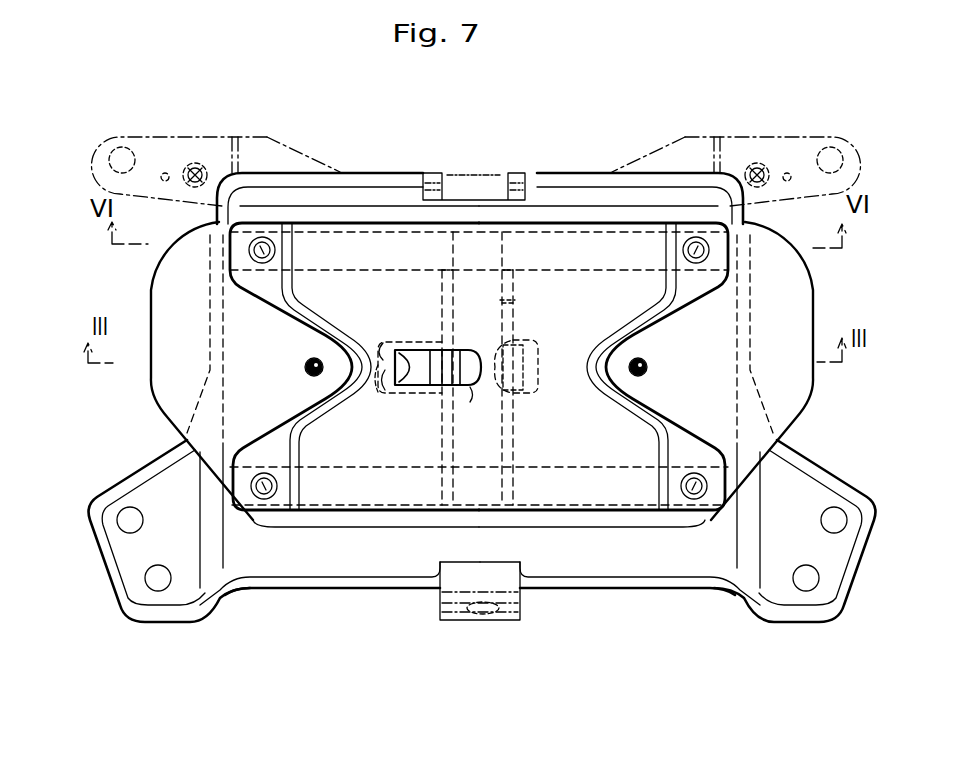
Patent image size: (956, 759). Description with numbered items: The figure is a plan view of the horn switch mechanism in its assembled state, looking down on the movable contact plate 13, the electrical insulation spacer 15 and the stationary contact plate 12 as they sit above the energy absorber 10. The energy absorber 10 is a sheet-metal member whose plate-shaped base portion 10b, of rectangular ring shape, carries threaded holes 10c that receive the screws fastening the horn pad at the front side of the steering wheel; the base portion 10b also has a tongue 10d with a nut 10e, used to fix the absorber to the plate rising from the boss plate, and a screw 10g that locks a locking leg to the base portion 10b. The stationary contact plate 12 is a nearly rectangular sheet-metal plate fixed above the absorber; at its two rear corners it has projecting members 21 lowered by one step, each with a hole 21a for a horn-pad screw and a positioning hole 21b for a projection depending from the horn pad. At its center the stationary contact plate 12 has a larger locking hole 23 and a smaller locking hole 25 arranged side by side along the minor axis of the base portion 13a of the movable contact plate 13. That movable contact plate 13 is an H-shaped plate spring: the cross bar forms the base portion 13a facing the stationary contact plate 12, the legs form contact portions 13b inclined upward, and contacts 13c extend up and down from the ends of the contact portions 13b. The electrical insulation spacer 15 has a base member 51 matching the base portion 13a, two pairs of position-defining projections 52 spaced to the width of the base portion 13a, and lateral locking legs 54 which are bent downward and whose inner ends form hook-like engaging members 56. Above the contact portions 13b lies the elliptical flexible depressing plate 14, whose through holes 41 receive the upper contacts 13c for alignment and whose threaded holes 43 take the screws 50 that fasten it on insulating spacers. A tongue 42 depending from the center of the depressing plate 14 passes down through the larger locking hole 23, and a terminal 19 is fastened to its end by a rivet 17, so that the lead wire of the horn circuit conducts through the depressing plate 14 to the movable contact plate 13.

The energy absorber 10 is at (476, 134).
The base portion 10b is at (672, 162).
The threaded holes 10c is at (140, 158).
The tongue 10d is at (505, 615).
The nut 10e is at (470, 610).
The screw 10g is at (200, 165).
The stationary contact plate 12 is at (362, 560).
The movable contact plate 13 is at (470, 262).
The base portion 13a is at (474, 147).
The contact portions 13b is at (358, 243).
The contacts 13c is at (262, 268).
The depressing plate 14 is at (780, 322).
The electrical insulation spacer 15 is at (557, 316).
The rivet 17 is at (418, 387).
The terminal 19 is at (383, 343).
The projecting members 21 is at (180, 598).
The hole 21a is at (808, 592).
The positioning hole 21b is at (134, 508).
The locking hole 23 is at (378, 366).
The locking hole 25 is at (540, 356).
The through holes 41 is at (260, 250).
The tongue 42 is at (385, 372).
The threaded holes 43 is at (306, 374).
The screws 50 is at (308, 363).
The base member 51 is at (520, 305).
The position-defining projections 52 is at (440, 272).
The locking legs 54 is at (430, 350).
The hook-like engaging members 56 is at (470, 388).